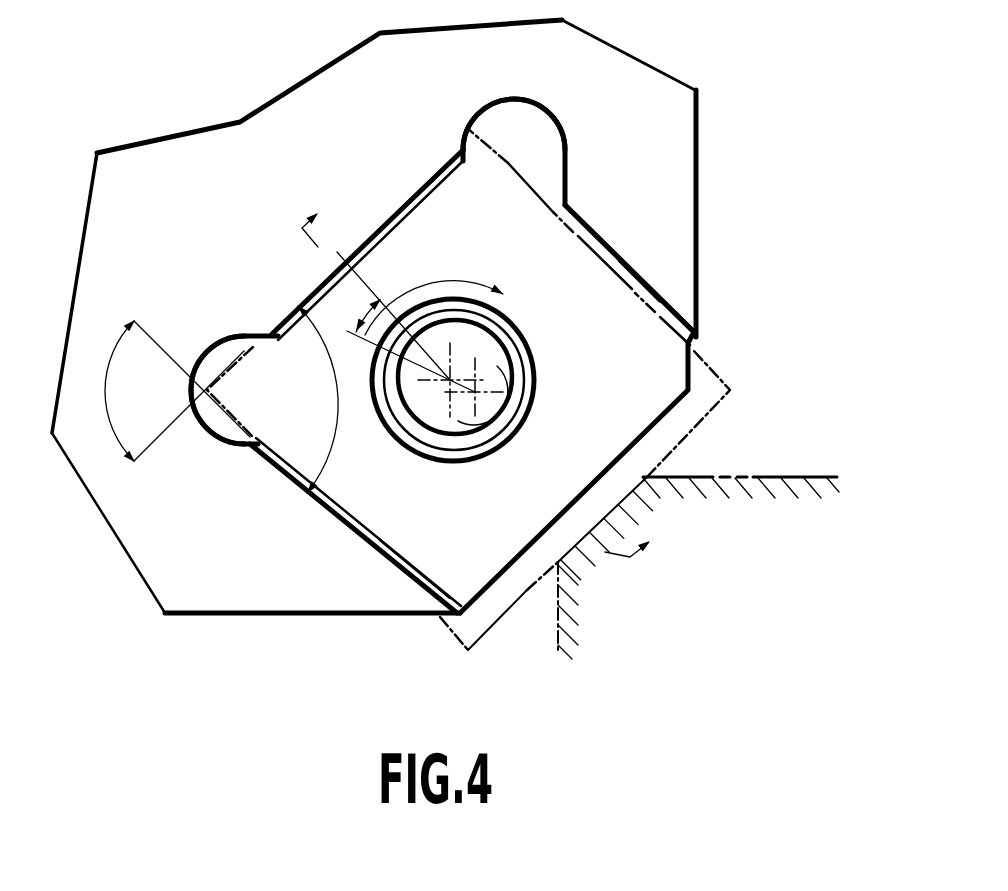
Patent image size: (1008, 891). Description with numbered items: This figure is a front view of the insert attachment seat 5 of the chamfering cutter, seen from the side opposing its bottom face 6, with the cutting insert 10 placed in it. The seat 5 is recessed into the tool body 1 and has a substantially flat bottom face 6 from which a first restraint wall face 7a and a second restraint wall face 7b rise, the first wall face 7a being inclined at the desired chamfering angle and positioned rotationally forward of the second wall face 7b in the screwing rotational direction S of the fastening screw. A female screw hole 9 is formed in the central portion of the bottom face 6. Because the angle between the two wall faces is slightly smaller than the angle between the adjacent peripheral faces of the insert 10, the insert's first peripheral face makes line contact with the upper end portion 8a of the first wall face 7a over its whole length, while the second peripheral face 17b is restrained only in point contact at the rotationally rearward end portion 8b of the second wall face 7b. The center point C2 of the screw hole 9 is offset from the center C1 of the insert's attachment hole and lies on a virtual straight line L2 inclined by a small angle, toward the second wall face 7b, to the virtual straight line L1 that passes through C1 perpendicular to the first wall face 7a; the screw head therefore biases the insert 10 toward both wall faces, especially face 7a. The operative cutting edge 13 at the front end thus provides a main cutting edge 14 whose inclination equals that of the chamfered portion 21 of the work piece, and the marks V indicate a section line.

The tool body 1 is at (732, 174).
The insert attachment seat 5 is at (466, 257).
The bottom face 6 is at (542, 278).
The first restraint wall face 7a is at (392, 205).
The upper end portion of the first restraint wall face 8a is at (383, 212).
The second restraint wall face 7b is at (327, 512).
The end portion of the second restraint wall face 8b is at (441, 607).
The female screw hole 9 is at (503, 358).
The cutting insert 10 is at (730, 430).
The operative cutting edge 13 is at (233, 360).
The main cutting edge 14 is at (520, 600).
The second peripheral face 17b is at (360, 548).
The chamfered portion 21 is at (600, 521).
The section line V- V is at (482, 380).
The screwing rotational direction S is at (434, 287).
The virtual straight line L1 is at (337, 252).
The virtual straight line L2 is at (366, 340).
The center of the attachment hole C1 is at (478, 395).
The center point of the female screw hole C2 is at (448, 382).